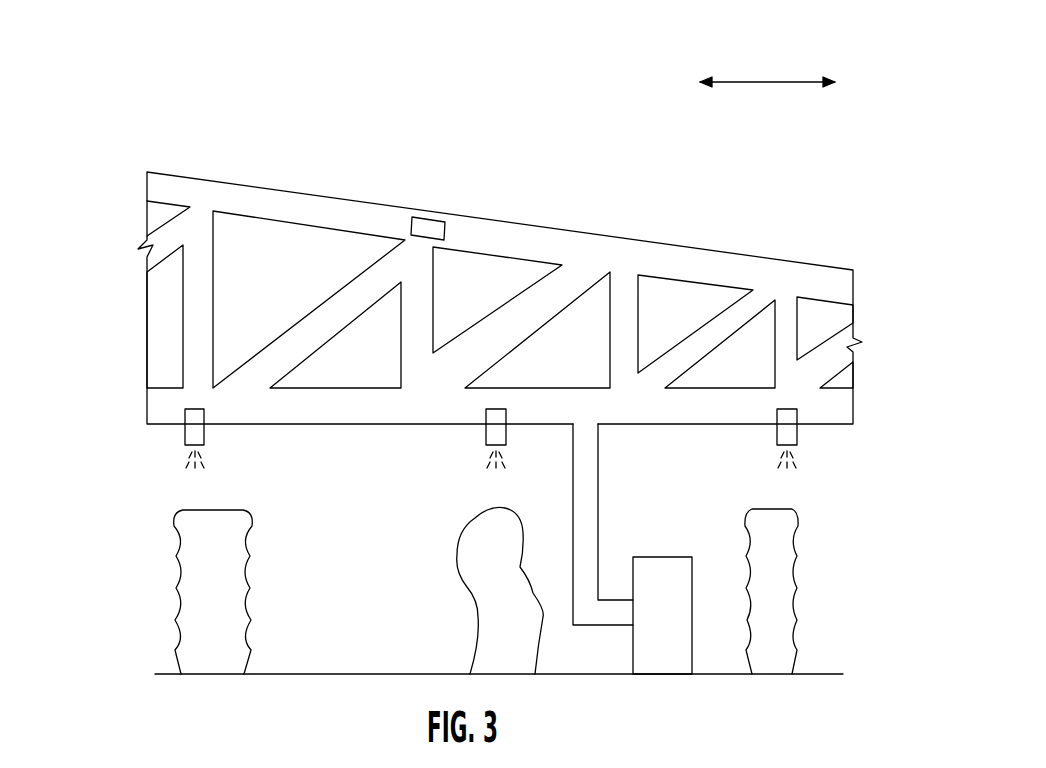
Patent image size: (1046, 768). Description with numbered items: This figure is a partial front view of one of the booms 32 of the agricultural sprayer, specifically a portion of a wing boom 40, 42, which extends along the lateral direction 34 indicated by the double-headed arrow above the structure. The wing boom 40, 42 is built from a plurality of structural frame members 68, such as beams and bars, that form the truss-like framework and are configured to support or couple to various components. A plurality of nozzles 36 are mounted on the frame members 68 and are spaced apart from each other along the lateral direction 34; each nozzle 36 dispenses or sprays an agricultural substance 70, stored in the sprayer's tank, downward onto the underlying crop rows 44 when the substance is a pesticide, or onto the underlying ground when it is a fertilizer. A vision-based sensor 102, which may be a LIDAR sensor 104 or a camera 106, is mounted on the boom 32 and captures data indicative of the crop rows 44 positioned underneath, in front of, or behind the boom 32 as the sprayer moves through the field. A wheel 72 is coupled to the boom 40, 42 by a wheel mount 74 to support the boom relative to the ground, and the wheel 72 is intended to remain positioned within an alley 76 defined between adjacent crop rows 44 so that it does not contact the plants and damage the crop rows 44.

The boom 32 is at (126, 70).
The lateral direction 34 is at (778, 80).
The nozzle 36 is at (185, 437).
The wing boom 40 is at (307, 188).
The wing boom 42 is at (500, 298).
The crop row 44 is at (198, 620).
The structural frame member 68 is at (202, 298).
The agricultural substance 70 is at (220, 458).
The wheel 72 is at (668, 555).
The wheel mount 74 is at (590, 488).
The alley 76 is at (371, 606).
The vision-based sensor 102 is at (452, 231).
The LIDAR sensor 104 is at (418, 216).
The camera 106 is at (452, 202).